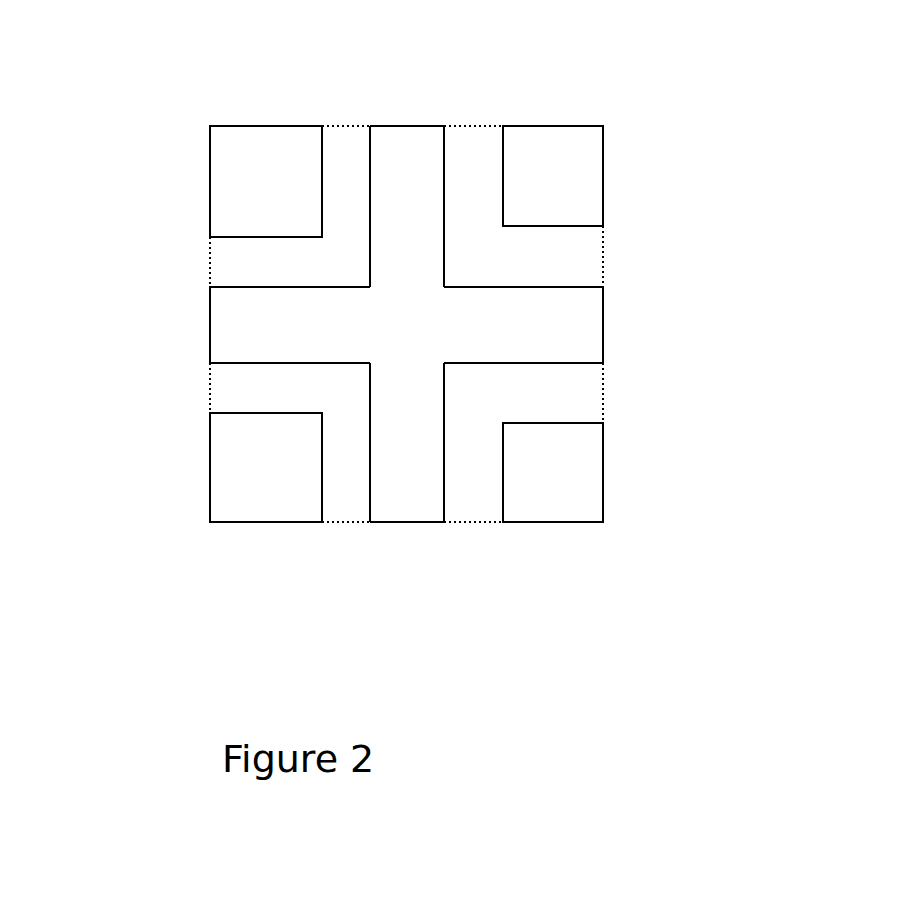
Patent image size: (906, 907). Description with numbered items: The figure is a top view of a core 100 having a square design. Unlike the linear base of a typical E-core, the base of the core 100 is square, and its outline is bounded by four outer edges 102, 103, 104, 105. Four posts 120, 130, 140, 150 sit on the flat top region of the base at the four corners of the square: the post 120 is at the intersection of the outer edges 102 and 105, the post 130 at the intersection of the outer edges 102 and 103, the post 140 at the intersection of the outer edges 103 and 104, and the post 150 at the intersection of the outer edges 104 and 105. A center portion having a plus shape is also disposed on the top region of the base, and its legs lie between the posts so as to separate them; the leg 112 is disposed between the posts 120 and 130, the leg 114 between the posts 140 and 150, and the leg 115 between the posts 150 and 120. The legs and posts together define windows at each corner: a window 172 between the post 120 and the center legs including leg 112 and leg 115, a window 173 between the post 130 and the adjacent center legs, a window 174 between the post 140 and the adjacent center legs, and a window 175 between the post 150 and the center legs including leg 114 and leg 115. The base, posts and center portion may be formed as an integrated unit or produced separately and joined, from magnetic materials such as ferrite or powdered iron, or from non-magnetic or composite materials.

The core 100 is at (716, 417).
The outer edge 102 is at (603, 238).
The outer edge 103 is at (349, 126).
The outer edge 104 is at (210, 274).
The outer edge 105 is at (467, 522).
The leg 112 is at (593, 322).
The leg 114 is at (240, 336).
The leg 115 is at (413, 148).
The post 120 is at (559, 503).
The post 130 is at (585, 163).
The post 140 is at (249, 141).
The post 150 is at (220, 493).
The window 172 is at (484, 475).
The window 173 is at (567, 265).
The window 174 is at (341, 158).
The window 175 is at (220, 383).